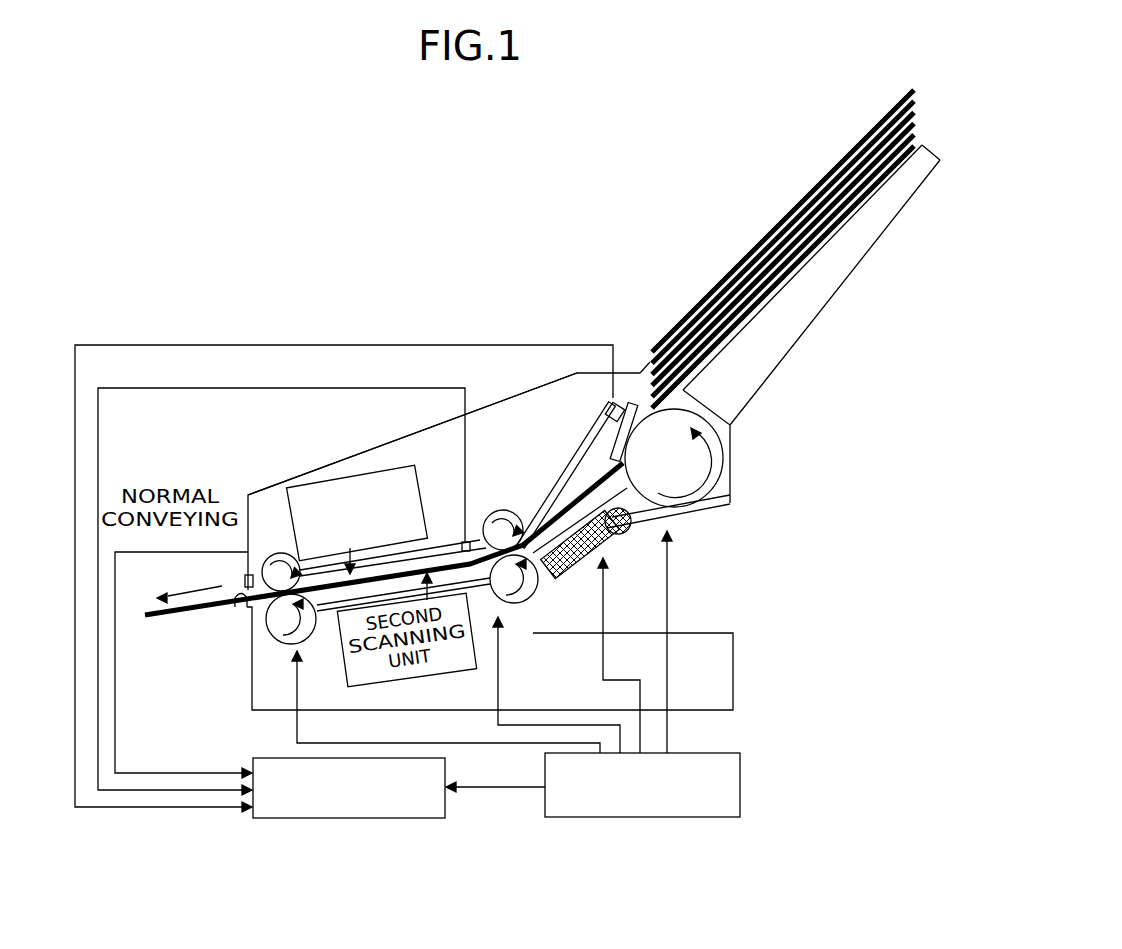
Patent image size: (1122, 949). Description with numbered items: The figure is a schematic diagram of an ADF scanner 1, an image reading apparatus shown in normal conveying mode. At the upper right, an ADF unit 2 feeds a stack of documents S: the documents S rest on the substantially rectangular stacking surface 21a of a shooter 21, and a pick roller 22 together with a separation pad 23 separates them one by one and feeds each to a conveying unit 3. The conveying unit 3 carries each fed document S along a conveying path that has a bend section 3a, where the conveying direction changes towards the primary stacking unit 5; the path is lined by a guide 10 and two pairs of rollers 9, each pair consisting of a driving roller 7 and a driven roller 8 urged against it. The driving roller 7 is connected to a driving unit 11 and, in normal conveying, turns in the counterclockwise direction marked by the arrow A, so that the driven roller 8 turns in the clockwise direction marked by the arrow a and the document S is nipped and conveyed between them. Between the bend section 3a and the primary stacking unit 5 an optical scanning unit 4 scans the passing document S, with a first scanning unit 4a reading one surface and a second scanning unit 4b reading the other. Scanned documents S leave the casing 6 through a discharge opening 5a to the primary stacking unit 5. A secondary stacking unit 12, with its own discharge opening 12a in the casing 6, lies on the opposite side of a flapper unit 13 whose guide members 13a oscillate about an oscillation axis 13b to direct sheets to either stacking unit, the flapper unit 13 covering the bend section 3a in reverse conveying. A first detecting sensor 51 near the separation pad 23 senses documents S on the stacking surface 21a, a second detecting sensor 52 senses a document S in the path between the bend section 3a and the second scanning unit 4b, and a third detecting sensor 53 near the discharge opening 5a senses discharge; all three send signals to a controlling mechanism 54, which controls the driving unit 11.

The ADF scanner 1 is at (358, 203).
The ADF unit 2 is at (772, 326).
The shooter 21 is at (811, 285).
The stacking surface 21a is at (828, 240).
The pick roller 22 is at (673, 430).
The separation pad 23 is at (645, 366).
The documents S is at (868, 127).
The conveying unit 3 is at (444, 474).
The bend section 3a is at (538, 488).
The optical scanning unit 4 is at (386, 511).
The first scanning unit 4a is at (322, 552).
The second scanning unit 4b is at (340, 612).
The primary stacking unit 5 is at (220, 636).
The discharge opening 5a is at (234, 610).
The casing 6 is at (347, 460).
The driving roller 7 is at (283, 644).
The driven roller 8 is at (270, 593).
The pair of rollers 9 is at (385, 629).
The guide 10 is at (442, 546).
The driving unit 11 is at (693, 818).
The secondary stacking unit 12 is at (701, 520).
The discharge opening 12a is at (712, 504).
The flapper unit 13 is at (626, 630).
The guide members 13a is at (588, 573).
The oscillation axis 13b is at (667, 540).
The first detecting sensor 51 is at (604, 407).
The second detecting sensor 52 is at (466, 541).
The third detecting sensor 53 is at (245, 580).
The controlling mechanism 54 is at (387, 822).
The rotating direction for normal conveying A is at (306, 642).
The rotating direction of driven roller a is at (279, 553).